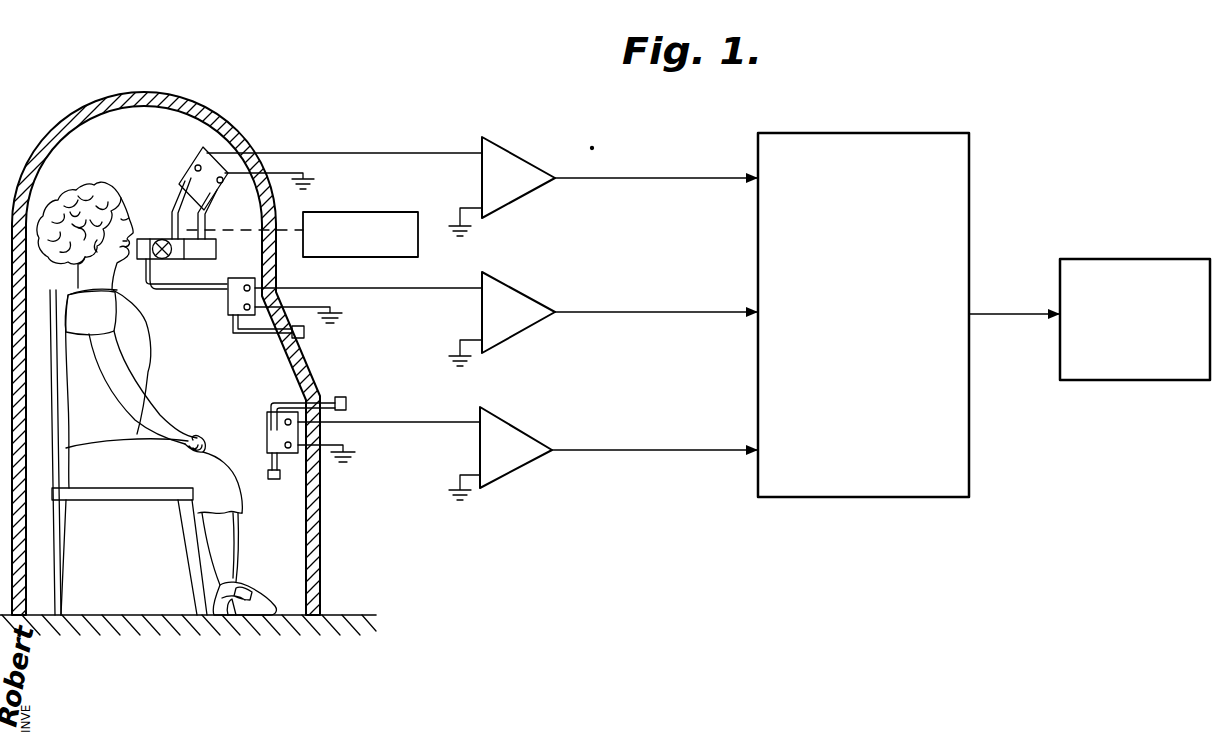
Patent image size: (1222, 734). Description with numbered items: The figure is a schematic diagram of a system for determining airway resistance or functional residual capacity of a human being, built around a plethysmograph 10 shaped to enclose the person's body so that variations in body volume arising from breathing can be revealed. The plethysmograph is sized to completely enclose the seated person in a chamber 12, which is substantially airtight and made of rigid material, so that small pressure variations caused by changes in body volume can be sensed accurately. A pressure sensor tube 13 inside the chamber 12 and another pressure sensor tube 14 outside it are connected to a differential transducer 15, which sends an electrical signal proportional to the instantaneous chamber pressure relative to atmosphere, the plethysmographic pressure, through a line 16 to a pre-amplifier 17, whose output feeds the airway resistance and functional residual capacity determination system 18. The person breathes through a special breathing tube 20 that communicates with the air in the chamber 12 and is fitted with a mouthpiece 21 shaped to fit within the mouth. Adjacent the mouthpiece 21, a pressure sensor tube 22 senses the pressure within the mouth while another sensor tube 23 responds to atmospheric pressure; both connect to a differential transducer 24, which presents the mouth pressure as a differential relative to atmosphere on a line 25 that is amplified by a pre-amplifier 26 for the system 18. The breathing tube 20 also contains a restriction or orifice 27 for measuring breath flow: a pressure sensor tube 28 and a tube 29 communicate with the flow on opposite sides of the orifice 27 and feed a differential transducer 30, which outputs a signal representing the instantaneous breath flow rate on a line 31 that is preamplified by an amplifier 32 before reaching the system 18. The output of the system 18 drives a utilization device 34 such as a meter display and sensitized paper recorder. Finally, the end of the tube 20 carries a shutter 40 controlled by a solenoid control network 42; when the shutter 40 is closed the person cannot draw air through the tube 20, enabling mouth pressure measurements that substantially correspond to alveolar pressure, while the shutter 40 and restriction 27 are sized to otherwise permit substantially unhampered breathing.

The plethysmograph 10 is at (133, 90).
The chamber 12 is at (210, 396).
The pressure sensor tube 13 is at (276, 479).
The pressure sensor tube 14 is at (348, 405).
The differential transducer 15 is at (267, 433).
The line 16 is at (429, 426).
The pre-amplifier 17 is at (500, 414).
The airway resistance and functional residual capacity determination system 18 is at (905, 498).
The breathing tube 20 is at (146, 238).
The mouthpiece 21 is at (131, 259).
The pressure sensor tube 22 is at (160, 259).
The sensor tube 23 is at (304, 337).
The differential transducer 24 is at (285, 331).
The line 25 is at (407, 290).
The pre-amplifier 26 is at (512, 289).
The orifice 27 is at (204, 259).
The pressure sensor tube 28 is at (170, 196).
The tube 29 is at (202, 221).
The differential transducer 30 is at (196, 155).
The line 31 is at (402, 152).
The amplifier 32 is at (517, 153).
The utilization device 34 is at (1147, 380).
The shutter 40 is at (178, 259).
The solenoid control network 42 is at (395, 212).